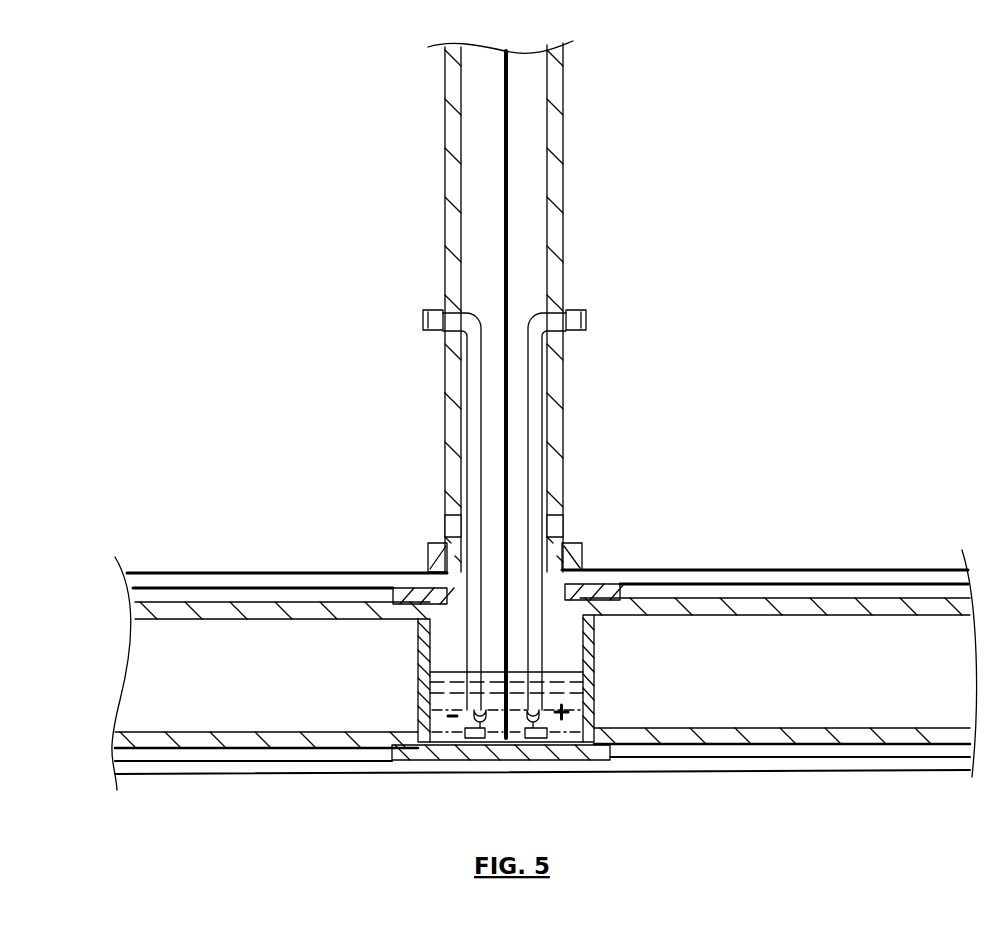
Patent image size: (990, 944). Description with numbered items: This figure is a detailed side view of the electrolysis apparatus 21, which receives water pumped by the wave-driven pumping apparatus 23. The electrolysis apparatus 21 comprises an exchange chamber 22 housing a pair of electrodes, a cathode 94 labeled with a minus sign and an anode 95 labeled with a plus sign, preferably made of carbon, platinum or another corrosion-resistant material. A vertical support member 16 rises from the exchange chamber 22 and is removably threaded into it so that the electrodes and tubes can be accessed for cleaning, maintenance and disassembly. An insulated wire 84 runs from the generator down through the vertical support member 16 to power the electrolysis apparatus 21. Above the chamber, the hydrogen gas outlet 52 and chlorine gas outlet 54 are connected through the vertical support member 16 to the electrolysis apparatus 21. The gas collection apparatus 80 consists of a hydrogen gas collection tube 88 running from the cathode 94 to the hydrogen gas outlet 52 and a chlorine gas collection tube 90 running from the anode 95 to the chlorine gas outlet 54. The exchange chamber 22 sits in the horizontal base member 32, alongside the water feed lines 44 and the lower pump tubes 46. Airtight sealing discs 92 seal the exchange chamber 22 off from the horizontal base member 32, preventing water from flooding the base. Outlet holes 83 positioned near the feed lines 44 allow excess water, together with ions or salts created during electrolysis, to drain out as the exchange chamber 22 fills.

The vertical support member 16 is at (558, 148).
The insulated wire 84 is at (508, 87).
The hydrogen gas outlet 52 is at (427, 313).
The chlorine gas outlet 54 is at (581, 313).
The hydrogen gas collection tube 88 is at (470, 428).
The chlorine gas collection tube 90 is at (540, 398).
The gas collection apparatus 80 is at (487, 502).
The outlet holes 83 is at (443, 530).
The exchange chamber 22 is at (578, 567).
The electrolysis apparatus 21 is at (311, 388).
The pumping apparatus 23 is at (140, 557).
The water feed lines 44 is at (234, 582).
The horizontal base member 32 is at (273, 612).
The lower pump tubes 46 is at (243, 767).
The airtight sealing discs 92 is at (417, 678).
The cathode 94 is at (477, 729).
The anode 95 is at (538, 729).